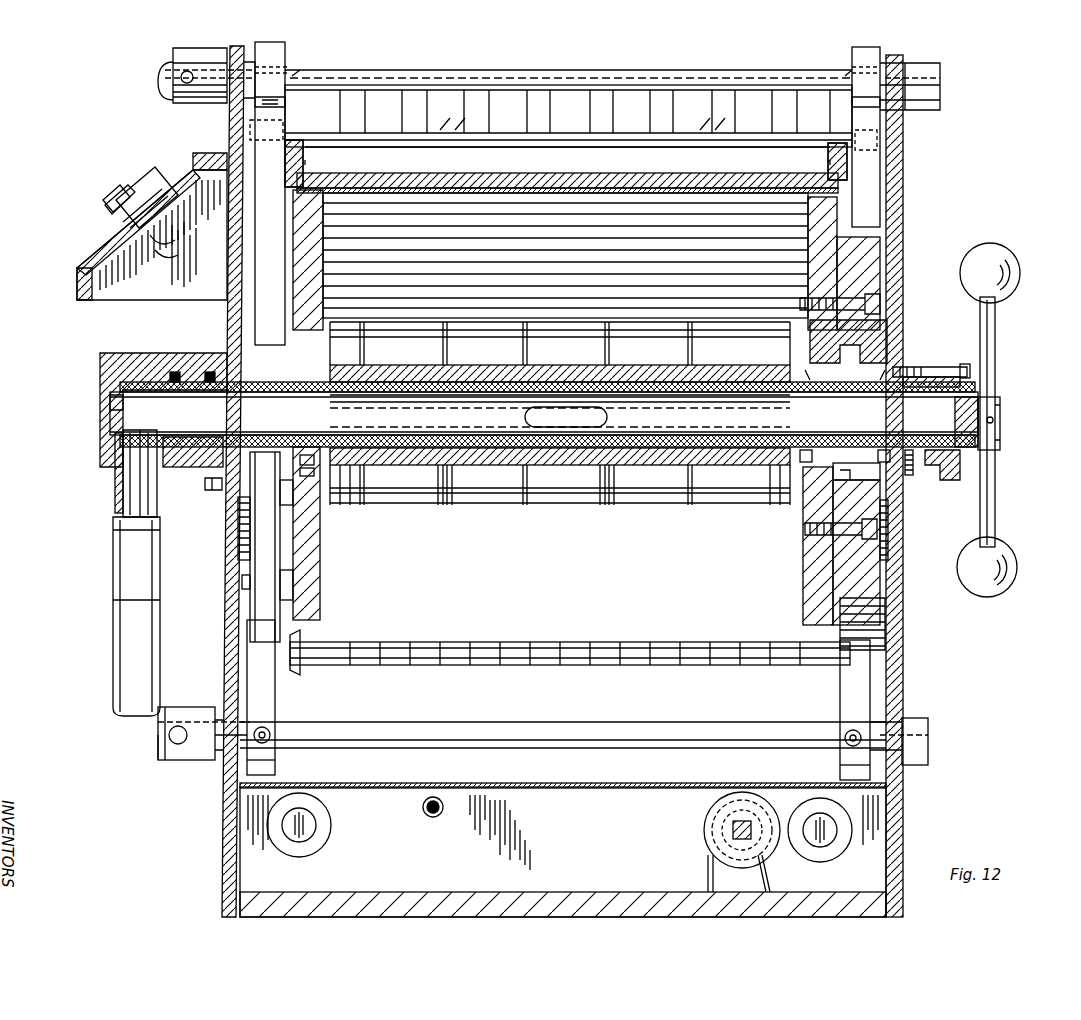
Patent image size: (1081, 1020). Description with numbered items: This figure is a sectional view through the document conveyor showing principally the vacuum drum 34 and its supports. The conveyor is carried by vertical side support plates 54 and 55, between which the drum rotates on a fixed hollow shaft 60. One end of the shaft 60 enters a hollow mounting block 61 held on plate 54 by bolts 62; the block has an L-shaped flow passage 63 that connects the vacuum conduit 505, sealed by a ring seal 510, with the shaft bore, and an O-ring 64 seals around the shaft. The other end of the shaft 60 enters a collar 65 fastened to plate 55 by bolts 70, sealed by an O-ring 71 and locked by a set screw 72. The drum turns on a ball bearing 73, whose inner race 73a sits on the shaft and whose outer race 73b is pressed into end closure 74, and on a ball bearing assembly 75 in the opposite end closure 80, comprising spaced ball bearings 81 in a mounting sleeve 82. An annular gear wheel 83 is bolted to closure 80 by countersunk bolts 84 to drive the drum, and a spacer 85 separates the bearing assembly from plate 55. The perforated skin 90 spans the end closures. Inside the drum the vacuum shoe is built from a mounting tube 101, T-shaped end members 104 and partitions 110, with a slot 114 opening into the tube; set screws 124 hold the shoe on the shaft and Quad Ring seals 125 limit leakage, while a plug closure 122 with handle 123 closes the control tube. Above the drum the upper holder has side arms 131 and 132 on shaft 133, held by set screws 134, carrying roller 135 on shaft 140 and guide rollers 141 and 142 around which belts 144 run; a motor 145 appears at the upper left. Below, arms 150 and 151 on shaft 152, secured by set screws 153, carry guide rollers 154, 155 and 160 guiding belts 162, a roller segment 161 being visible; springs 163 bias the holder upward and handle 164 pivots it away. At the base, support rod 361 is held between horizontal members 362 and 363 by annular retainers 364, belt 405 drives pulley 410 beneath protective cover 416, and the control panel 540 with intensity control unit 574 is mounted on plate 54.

The vacuum drum 34 is at (545, 655).
The side support plate 54 is at (228, 108).
The side support plate 55 is at (905, 140).
The fixed hollow shaft 60 is at (165, 382).
The mounting block 61 is at (100, 353).
The bolts 62 is at (205, 483).
The L-shaped flow passage 63 is at (112, 400).
The O-ring 64 is at (185, 370).
The collar 65 is at (925, 368).
The bolts 70 is at (965, 362).
The O-ring 71 is at (910, 478).
The set screw 72 is at (925, 480).
The ball bearing 73 is at (285, 480).
The inner race 73a is at (305, 452).
The outer race 73b is at (310, 478).
The end closure 74 is at (310, 548).
The ball bearing assembly 75 is at (815, 488).
The end closure 80 is at (805, 548).
The ball bearings 81 is at (828, 428).
The mounting sleeve 82 is at (822, 358).
The annular gear wheel 83 is at (870, 568).
The countersunk bolts 84 is at (880, 305).
The spacer 85 is at (912, 445).
The perforated skin 90 is at (580, 642).
The mounting tube 101 is at (540, 470).
The T-shaped side end member 104 is at (350, 500).
The partitions 110 is at (455, 478).
The slot 114 is at (330, 412).
The plug closure 122 is at (1000, 425).
The handle 123 is at (995, 320).
The set screws 124 is at (348, 340).
The Quad Ring seals 125 is at (360, 378).
The side arm 131 is at (852, 53).
The side arm 132 is at (285, 52).
The shaft 133 is at (410, 70).
The set screws 134 is at (476, 72).
The upper smooth surfaced roller 135 is at (370, 70).
The shaft 140 is at (370, 145).
The intermediate guide roller 141 is at (300, 240).
The lower guide roller 142 is at (320, 303).
The endless tape-like belts 144 is at (540, 100).
The motor 145 is at (175, 58).
The arm 150 is at (278, 698).
The arm 151 is at (870, 688).
The shaft 152 is at (530, 748).
The set screws 153 is at (270, 740).
The upper guide roller 154 is at (290, 505).
The intermediate guide roller 155 is at (293, 585).
The lower guide roller 160 is at (297, 665).
The roller segment 161 is at (472, 660).
The endless tape-like belts 162 is at (405, 665).
The springs 163 is at (238, 530).
The handle 164 is at (158, 735).
The support rod 361 is at (836, 832).
The horizontal member 362 is at (310, 825).
The horizontal support member 363 is at (245, 855).
The annular retainers 364 is at (310, 850).
The endless belt 405 is at (710, 862).
The pulley 410 is at (708, 812).
The protective cover 416 is at (518, 783).
The conduit 505 is at (115, 553).
The ring seal 510 is at (112, 458).
The control panel 540 is at (178, 172).
The intensity control unit 574 is at (130, 198).